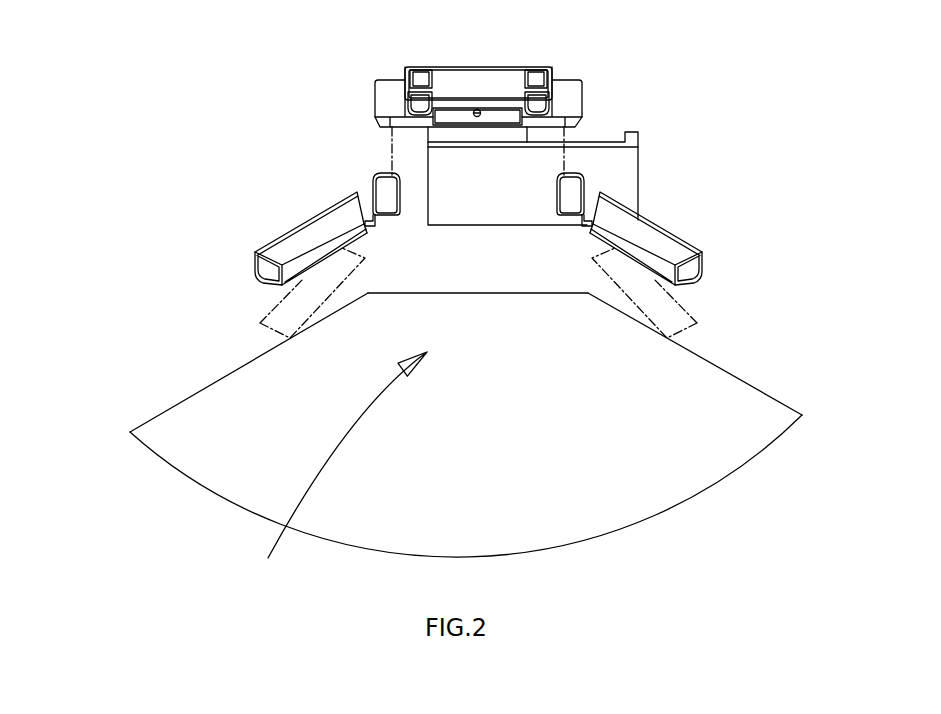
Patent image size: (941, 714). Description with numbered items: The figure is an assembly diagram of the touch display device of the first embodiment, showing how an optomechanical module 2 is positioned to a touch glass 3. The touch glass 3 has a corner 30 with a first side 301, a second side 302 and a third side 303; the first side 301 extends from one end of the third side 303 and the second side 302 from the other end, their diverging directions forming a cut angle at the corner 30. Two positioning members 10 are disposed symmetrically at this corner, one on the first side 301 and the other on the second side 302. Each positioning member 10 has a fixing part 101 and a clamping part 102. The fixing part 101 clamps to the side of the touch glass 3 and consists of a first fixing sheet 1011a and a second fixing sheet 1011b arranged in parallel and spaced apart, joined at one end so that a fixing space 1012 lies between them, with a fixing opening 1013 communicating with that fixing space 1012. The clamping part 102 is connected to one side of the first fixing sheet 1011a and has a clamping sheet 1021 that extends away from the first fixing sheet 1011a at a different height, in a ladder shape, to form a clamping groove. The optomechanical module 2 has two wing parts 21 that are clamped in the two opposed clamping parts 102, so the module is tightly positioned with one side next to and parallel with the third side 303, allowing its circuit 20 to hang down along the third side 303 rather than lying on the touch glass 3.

The optomechanical module 2 is at (480, 67).
The wing part 21 is at (372, 84).
The circuit 20 is at (588, 141).
The positioning member 10 is at (235, 228).
The fixing part 101 is at (305, 220).
The first fixing sheet 1011a is at (322, 222).
The second fixing sheet 1011b is at (267, 280).
The fixing space 1012 is at (277, 272).
The fixing opening 1013 is at (253, 263).
The clamping part 102 is at (366, 172).
The clamping sheet 1021 is at (383, 217).
The touch glass 3 is at (620, 490).
The corner 30 is at (340, 469).
The first side 301 is at (192, 395).
The second side 302 is at (740, 377).
The third side 303 is at (482, 292).